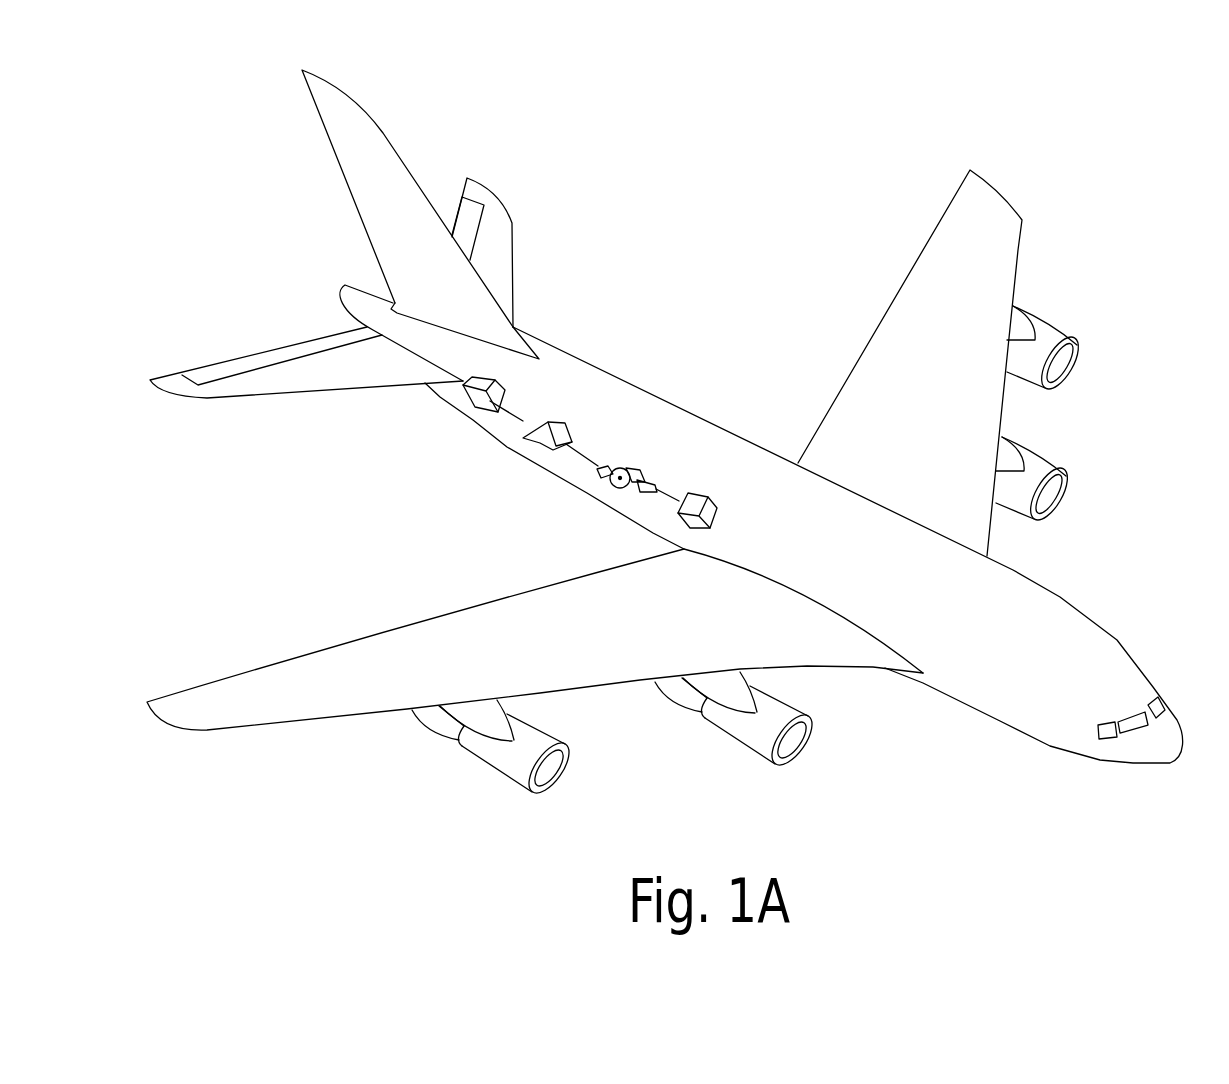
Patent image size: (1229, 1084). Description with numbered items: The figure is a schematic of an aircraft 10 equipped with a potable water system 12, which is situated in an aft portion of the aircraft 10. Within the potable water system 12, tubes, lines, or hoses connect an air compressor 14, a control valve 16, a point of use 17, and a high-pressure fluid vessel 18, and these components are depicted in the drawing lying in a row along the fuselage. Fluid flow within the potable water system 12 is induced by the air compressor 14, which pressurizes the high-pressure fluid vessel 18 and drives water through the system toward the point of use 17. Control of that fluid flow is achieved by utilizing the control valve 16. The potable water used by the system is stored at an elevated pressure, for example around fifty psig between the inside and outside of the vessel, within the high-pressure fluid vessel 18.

The aircraft 10 is at (668, 434).
The potable water system 12 is at (598, 417).
The air compressor 14 is at (680, 512).
The control valve 16 is at (535, 440).
The point of use 17 is at (467, 392).
The high-pressure fluid vessel 18 is at (612, 484).